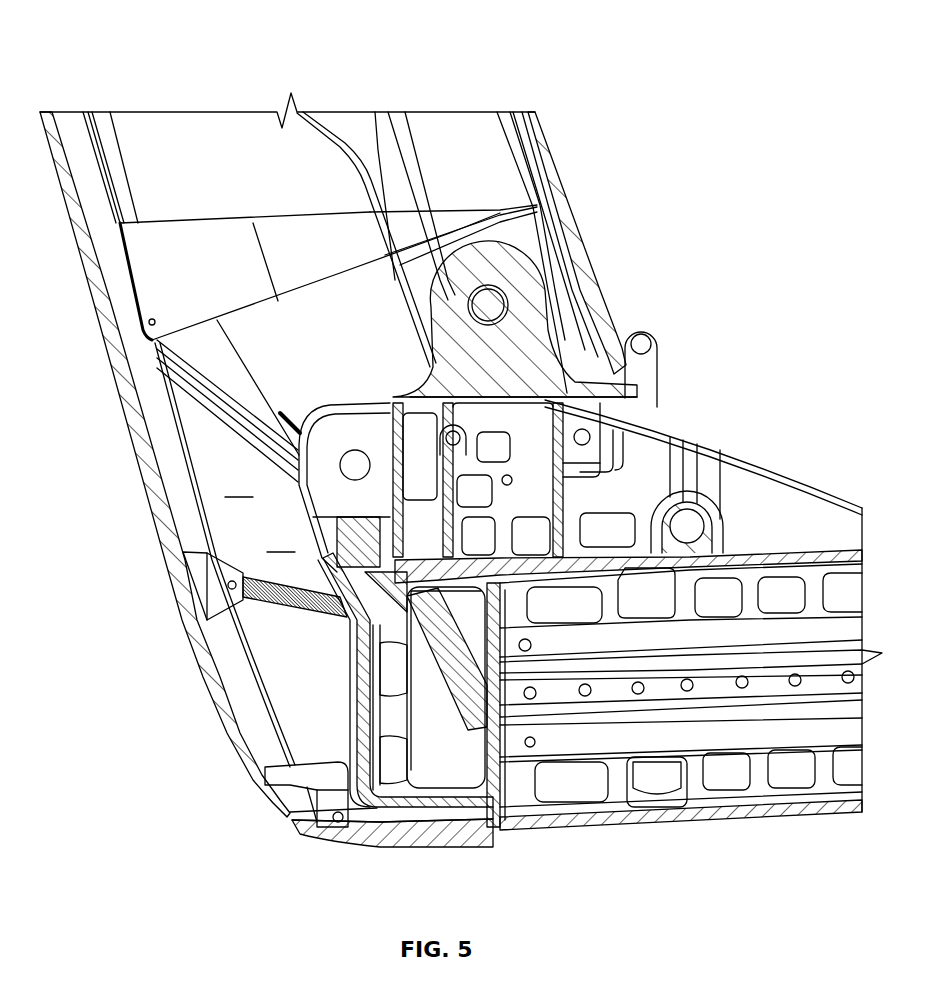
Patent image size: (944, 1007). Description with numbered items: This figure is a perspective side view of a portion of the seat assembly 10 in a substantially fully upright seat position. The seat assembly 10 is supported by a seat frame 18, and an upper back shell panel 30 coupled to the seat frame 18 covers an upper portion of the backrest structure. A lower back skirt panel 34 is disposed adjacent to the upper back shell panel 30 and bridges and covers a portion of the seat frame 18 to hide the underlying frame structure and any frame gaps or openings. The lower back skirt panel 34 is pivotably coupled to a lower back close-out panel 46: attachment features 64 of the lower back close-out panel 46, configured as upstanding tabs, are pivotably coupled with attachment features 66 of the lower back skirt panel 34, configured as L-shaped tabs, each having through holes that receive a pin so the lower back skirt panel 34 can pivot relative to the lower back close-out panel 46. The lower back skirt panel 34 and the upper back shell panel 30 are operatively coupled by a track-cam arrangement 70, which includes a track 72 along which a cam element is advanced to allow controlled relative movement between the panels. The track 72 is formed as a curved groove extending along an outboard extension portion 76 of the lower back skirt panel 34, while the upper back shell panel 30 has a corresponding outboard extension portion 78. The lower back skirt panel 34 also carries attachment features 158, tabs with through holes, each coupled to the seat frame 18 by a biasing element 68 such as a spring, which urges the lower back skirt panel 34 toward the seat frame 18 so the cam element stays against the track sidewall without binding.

The seat assembly 10 is at (762, 44).
The seat frame 18 is at (612, 802).
The upper back shell panel 30 is at (193, 127).
The lower back skirt panel 34 is at (200, 677).
The lower back close-out panel 46 is at (392, 842).
The attachment features 64 is at (310, 820).
The attachment features 66 is at (305, 765).
The biasing element 68 is at (310, 605).
The track-cam arrangement 70 is at (208, 332).
The track 72 is at (243, 407).
The outboard extension portion 76 is at (380, 605).
The outboard extension portion 78 is at (165, 292).
The attachment features 158 is at (217, 580).